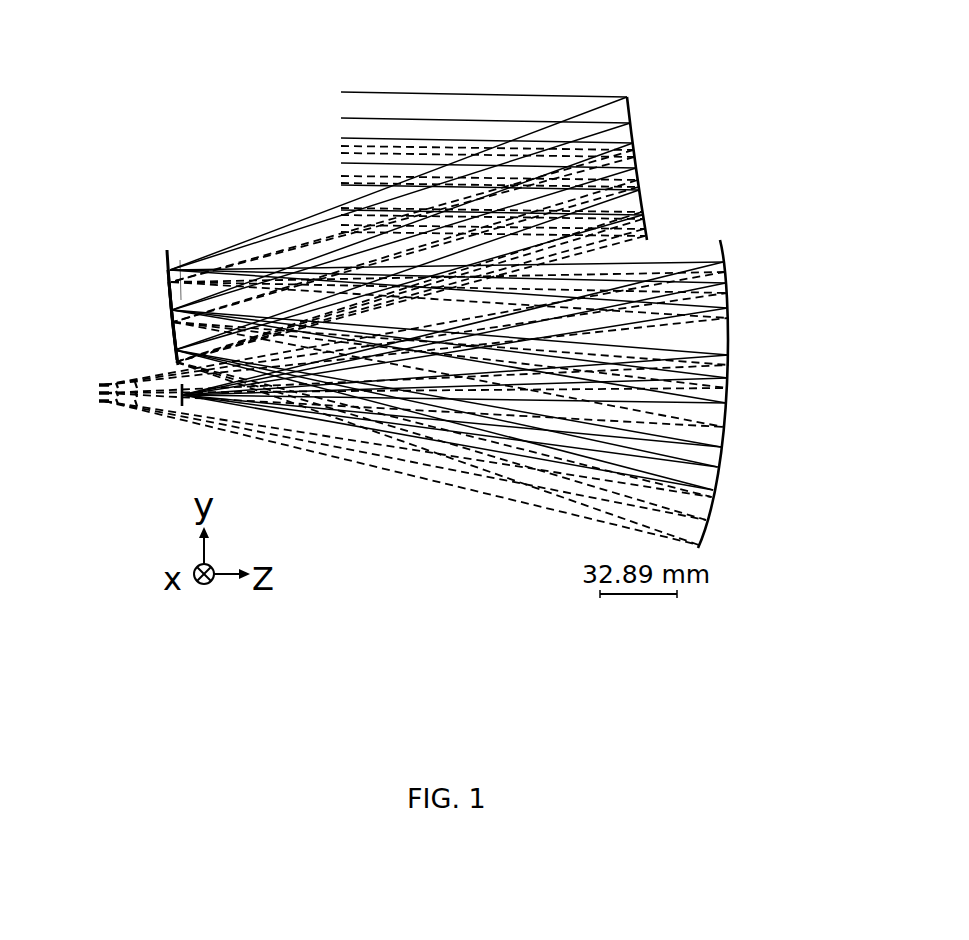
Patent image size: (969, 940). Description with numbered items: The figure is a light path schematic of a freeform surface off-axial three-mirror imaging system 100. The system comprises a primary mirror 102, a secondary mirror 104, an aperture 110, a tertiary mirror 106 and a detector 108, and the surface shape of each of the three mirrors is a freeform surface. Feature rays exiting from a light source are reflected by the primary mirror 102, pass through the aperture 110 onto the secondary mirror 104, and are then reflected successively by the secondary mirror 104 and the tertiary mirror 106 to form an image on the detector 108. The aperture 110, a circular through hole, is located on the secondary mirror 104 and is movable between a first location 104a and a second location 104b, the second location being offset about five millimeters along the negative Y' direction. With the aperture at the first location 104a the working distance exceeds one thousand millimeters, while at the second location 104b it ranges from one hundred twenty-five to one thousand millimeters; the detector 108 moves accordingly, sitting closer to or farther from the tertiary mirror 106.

The freeform surface off-axial three-mirror imaging system 100 is at (422, 44).
The primary mirror 102 is at (630, 100).
The secondary mirror 104 is at (168, 252).
The first location 104a is at (170, 270).
The second location 104b is at (170, 282).
The tertiary mirror 106 is at (731, 333).
The detector 108 is at (178, 410).
The aperture 110 is at (180, 298).